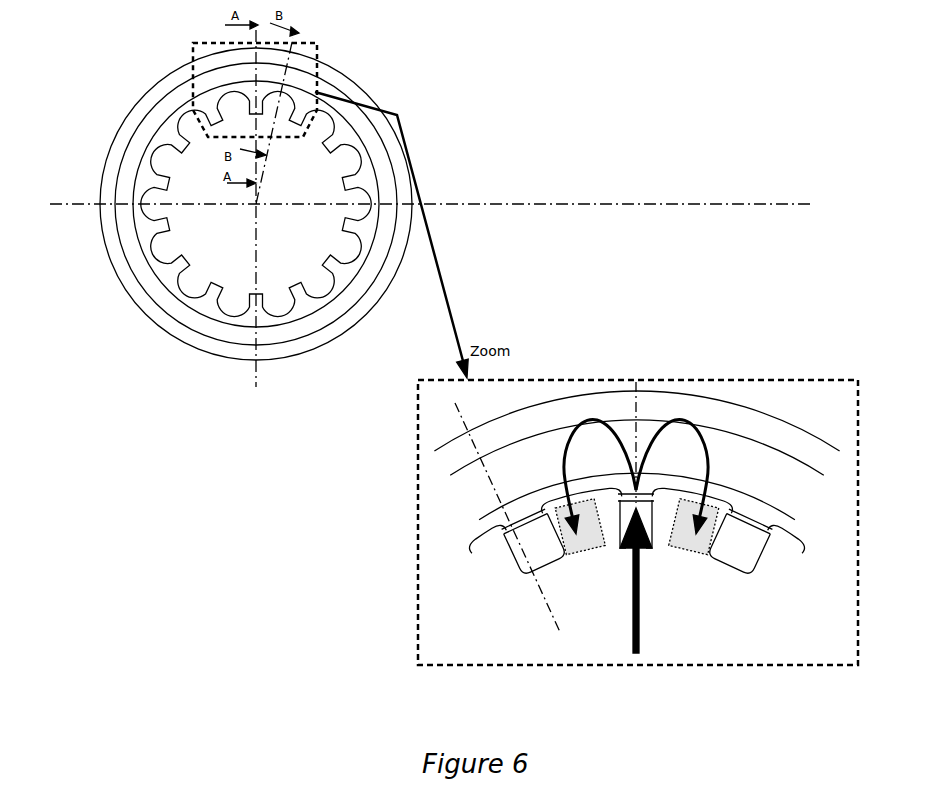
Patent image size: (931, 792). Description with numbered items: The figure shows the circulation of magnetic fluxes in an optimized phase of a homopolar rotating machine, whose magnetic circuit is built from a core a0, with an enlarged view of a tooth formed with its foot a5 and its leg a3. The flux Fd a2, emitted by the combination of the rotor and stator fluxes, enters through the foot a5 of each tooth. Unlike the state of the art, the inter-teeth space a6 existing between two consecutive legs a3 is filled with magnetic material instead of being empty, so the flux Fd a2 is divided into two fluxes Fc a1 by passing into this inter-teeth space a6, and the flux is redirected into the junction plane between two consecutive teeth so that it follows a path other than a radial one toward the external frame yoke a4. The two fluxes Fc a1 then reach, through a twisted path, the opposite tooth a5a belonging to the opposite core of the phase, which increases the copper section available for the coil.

The core a0 is at (145, 108).
The flux Fc a1 is at (596, 420).
The flux Fd a2 is at (635, 605).
The tooth leg a3 is at (150, 253).
The external frame yoke a4 is at (763, 422).
The tooth foot a5 is at (158, 183).
The opposite tooth a5a is at (587, 530).
The inter-teeth space a6 is at (720, 453).